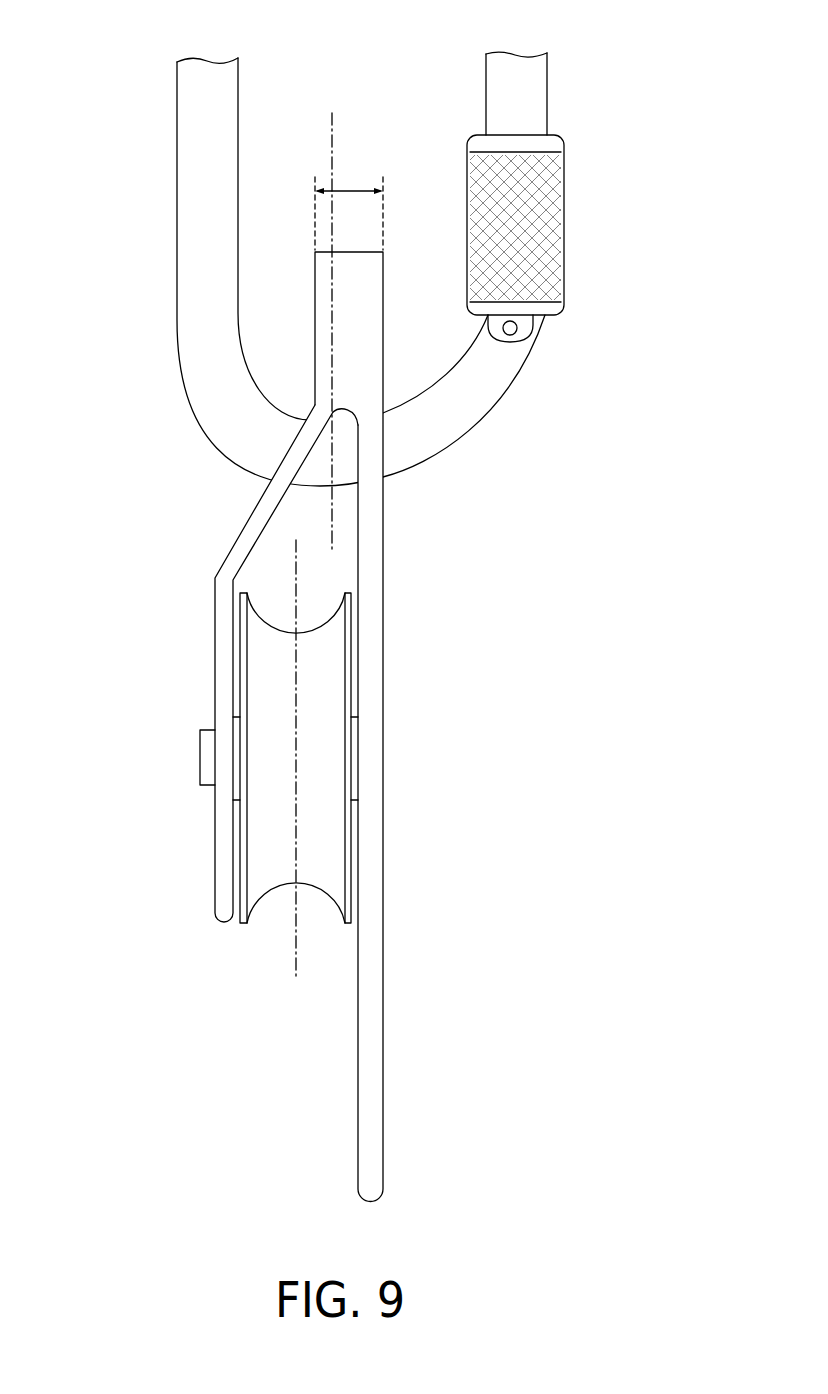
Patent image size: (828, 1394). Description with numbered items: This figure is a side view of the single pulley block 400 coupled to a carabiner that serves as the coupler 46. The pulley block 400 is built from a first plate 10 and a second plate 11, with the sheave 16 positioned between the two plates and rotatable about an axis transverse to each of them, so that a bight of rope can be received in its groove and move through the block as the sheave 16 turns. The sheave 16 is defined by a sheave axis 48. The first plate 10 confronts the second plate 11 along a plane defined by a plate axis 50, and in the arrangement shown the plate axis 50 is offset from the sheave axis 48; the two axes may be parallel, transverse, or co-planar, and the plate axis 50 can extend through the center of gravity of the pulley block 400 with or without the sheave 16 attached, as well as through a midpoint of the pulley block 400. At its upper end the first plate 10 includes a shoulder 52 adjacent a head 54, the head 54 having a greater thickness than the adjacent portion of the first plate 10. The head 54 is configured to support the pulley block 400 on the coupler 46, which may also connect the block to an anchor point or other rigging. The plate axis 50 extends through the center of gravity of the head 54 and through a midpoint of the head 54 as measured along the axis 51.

The pulley block 400 is at (292, 226).
The first plate 10 is at (383, 562).
The second plate 11 is at (227, 558).
The sheave 16 is at (272, 832).
The coupler 46 is at (223, 455).
The sheave axis 48 is at (297, 953).
The plate axis 50 is at (332, 162).
The axis 51 is at (347, 192).
The shoulder 52 is at (358, 448).
The head 54 is at (353, 347).